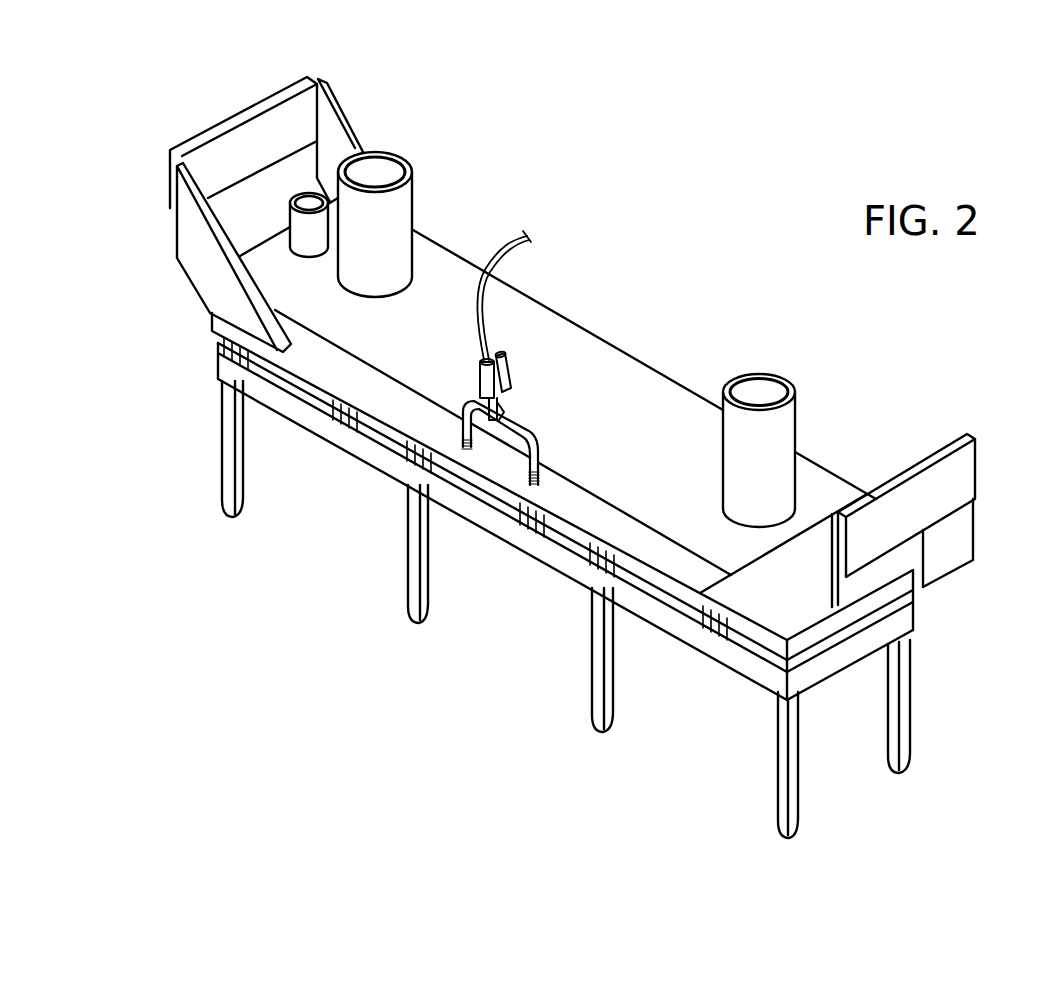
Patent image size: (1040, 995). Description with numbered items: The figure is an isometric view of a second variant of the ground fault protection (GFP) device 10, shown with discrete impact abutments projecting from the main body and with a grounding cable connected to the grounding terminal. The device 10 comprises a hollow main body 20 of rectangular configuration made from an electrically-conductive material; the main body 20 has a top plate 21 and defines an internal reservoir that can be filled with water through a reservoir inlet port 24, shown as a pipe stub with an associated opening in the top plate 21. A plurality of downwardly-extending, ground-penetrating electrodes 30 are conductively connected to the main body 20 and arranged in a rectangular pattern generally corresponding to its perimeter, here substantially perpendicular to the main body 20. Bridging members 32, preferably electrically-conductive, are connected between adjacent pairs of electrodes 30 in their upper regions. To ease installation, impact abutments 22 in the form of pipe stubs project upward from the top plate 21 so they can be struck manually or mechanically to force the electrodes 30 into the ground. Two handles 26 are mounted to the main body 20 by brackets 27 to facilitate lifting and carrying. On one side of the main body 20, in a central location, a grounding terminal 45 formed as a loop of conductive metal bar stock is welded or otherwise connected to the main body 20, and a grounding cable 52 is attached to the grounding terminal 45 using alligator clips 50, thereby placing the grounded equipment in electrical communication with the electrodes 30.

The ground fault protection (GFP) device 10 is at (718, 250).
The main body 20 is at (830, 473).
The top plate 21 is at (598, 388).
The impact abutments 22 is at (398, 212).
The reservoir inlet port 24 is at (290, 222).
The handles 26 is at (218, 132).
The brackets 27 is at (353, 128).
The ground-penetrating electrodes 30 is at (240, 497).
The bridging members 32 is at (497, 522).
The grounding terminal 45 is at (535, 429).
The alligator clips 50 is at (482, 378).
The grounding cable 52 is at (495, 250).